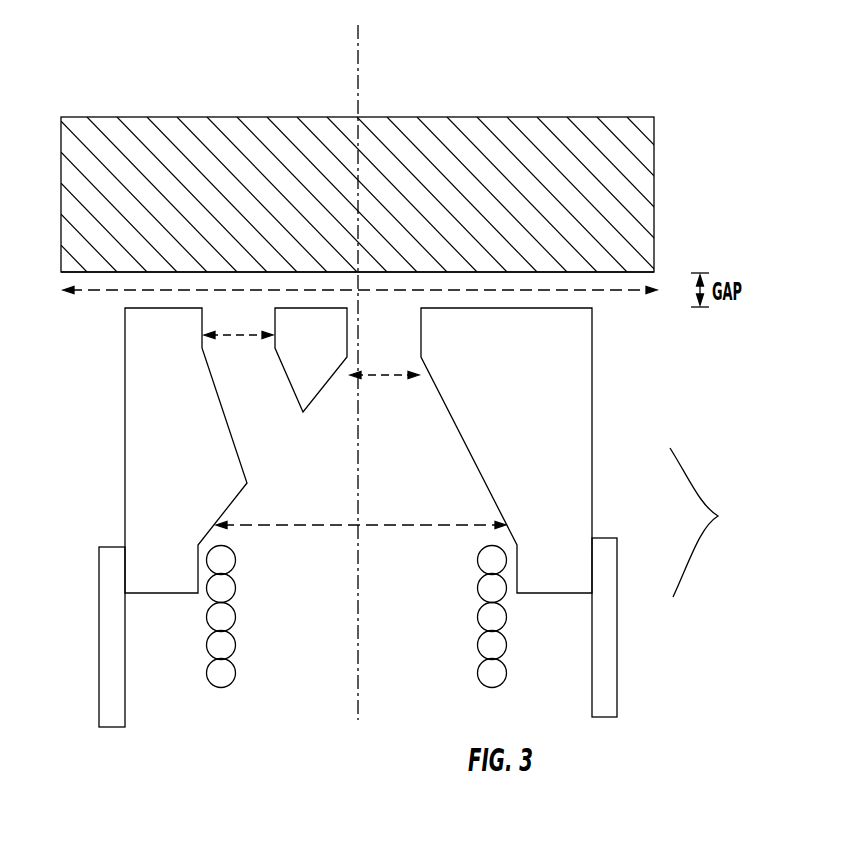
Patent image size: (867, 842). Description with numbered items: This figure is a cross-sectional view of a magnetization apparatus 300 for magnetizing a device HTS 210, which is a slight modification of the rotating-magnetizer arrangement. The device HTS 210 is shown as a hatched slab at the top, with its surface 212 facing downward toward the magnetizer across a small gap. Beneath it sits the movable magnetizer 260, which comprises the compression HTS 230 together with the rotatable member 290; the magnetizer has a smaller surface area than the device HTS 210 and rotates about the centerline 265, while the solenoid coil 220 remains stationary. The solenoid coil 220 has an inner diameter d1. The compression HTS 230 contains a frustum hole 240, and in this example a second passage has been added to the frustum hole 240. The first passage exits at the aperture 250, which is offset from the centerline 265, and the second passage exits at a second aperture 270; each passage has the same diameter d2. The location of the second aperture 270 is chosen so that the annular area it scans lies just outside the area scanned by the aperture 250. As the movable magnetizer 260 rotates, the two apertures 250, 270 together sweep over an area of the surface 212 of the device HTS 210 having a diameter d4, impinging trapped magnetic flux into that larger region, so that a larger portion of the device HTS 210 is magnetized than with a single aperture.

The magnetization apparatus 300 is at (106, 74).
The centerline 265 is at (358, 73).
The device HTS 210 is at (643, 156).
The surface of device HTS 212 is at (608, 272).
The second aperture 270 is at (235, 306).
The aperture 250 is at (370, 318).
The compression HTS 230 is at (592, 393).
The rotatable member 290 is at (617, 657).
The solenoid coil 220 is at (478, 633).
The frustum hole 240 is at (322, 509).
The movable magnetizer 260 is at (715, 522).
The inner diameter of coil d1 is at (420, 522).
The aperture diameter d2 is at (245, 340).
The scanned area diameter d4 is at (373, 290).